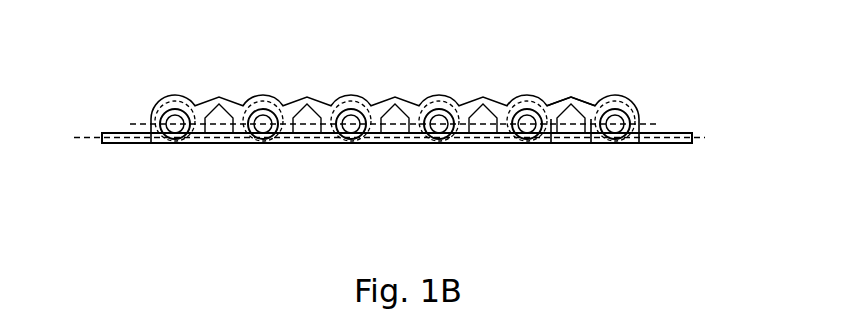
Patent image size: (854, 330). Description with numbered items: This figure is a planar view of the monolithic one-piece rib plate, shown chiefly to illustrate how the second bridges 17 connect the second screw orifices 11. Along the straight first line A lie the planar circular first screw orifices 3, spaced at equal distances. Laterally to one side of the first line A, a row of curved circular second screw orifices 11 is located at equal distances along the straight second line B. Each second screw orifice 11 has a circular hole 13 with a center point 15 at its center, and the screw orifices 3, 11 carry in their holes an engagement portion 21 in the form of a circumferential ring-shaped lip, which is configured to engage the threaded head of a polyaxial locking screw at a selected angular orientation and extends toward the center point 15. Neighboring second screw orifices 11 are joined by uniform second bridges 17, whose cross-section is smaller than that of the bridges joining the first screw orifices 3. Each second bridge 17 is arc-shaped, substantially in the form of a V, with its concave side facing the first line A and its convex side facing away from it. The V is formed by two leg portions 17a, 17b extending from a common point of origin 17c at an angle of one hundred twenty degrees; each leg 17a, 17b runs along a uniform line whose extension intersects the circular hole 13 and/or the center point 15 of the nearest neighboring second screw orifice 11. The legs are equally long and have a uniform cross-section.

The first screw orifice 3 is at (125, 145).
The second screw orifice 11 is at (169, 83).
The circular hole 13 is at (177, 116).
The center point 15 is at (257, 117).
The second bridge 17 is at (395, 96).
The leg portion 17a is at (547, 144).
The leg portion 17b is at (598, 144).
The common point of origin 17c is at (571, 97).
The engagement portion 21 is at (527, 106).
The first line A is at (704, 138).
The second line B is at (652, 122).